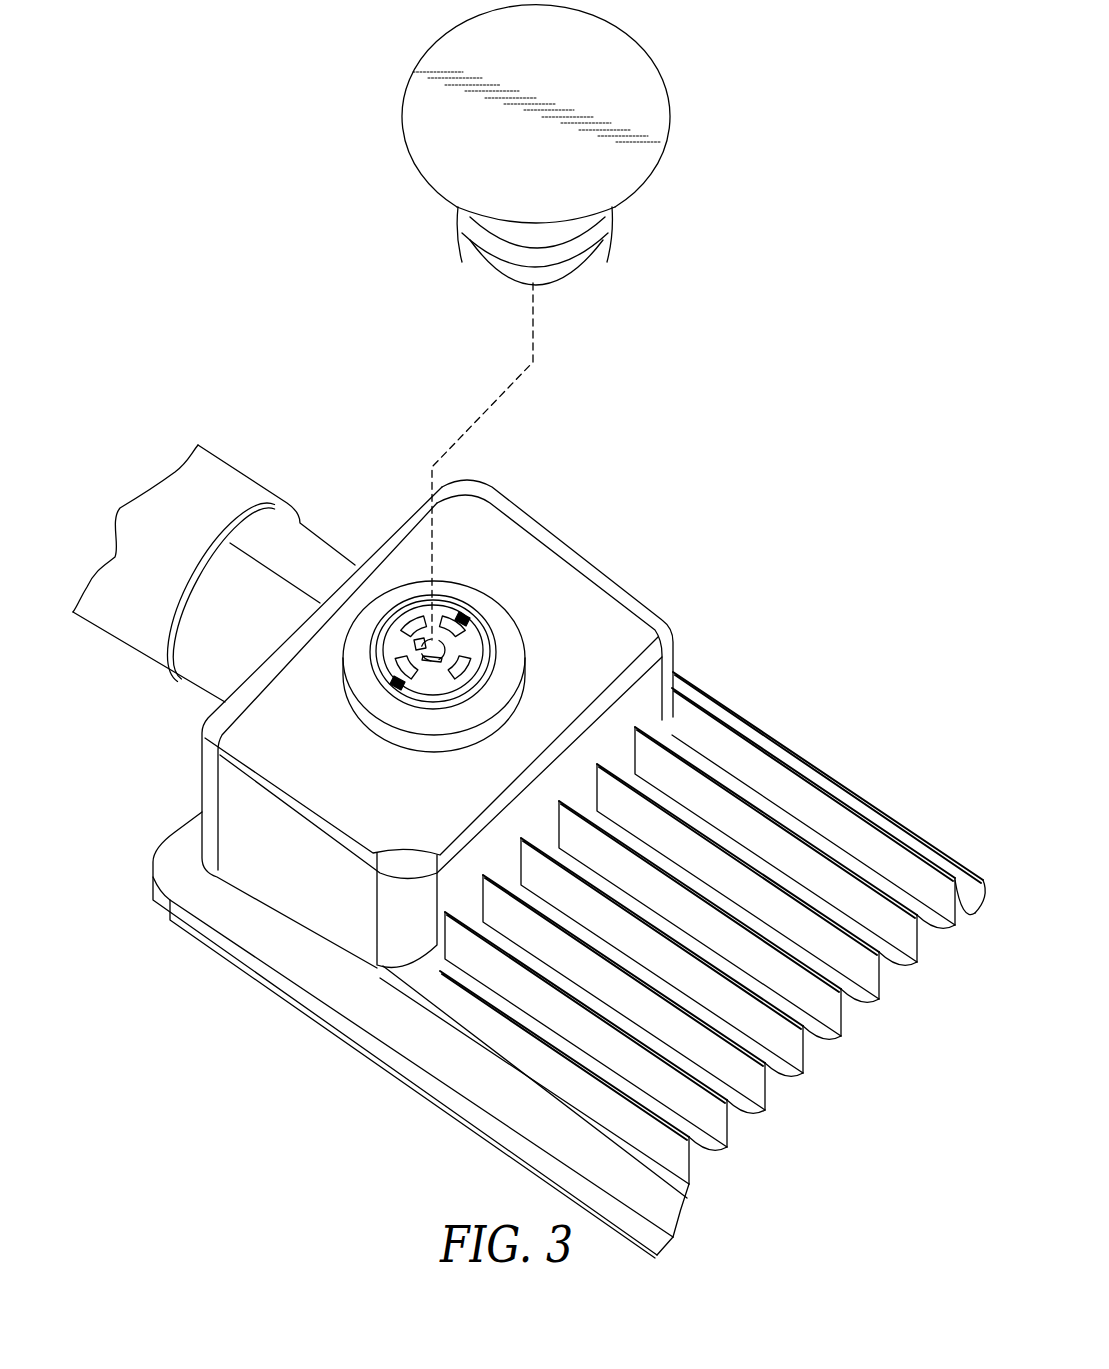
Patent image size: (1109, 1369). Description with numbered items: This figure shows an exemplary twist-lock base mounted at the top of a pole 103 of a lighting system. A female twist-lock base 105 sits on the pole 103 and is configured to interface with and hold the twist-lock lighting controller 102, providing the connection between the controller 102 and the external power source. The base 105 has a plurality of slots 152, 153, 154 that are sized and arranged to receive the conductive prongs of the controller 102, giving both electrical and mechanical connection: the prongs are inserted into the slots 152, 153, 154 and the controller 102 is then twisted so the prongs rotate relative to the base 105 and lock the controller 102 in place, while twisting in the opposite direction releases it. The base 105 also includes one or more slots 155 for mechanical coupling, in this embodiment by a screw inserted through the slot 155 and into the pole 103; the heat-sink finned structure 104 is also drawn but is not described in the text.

The twist-lock lighting controller 102 is at (681, 134).
The pole 103 is at (168, 676).
The heat sink fins 104 is at (782, 752).
The female twist-lock base 105 is at (388, 590).
The slot 152 is at (432, 673).
The slot 153 is at (415, 648).
The slot 154 is at (440, 655).
The slot 155 is at (466, 616).